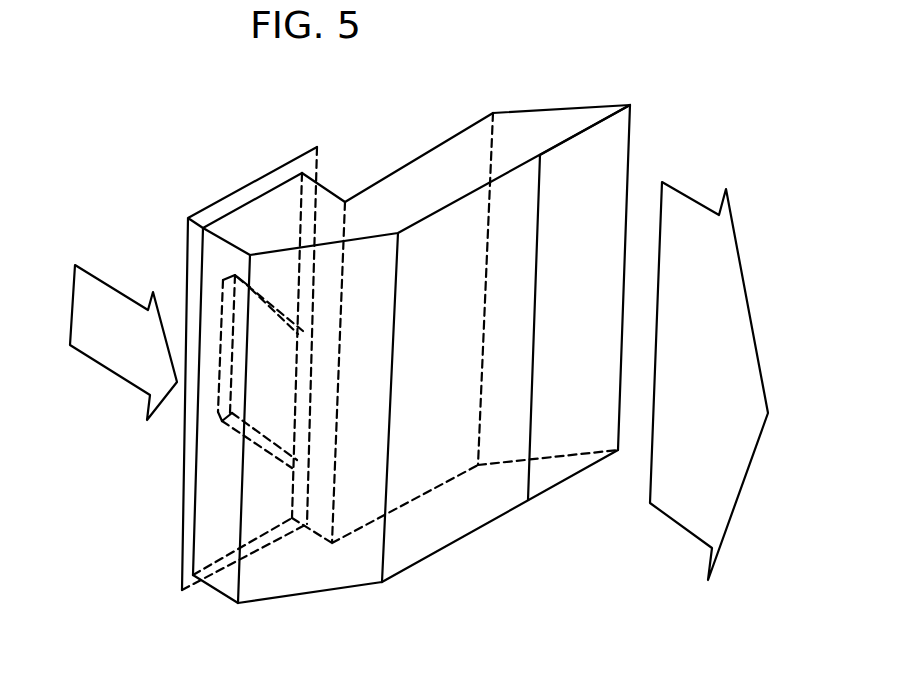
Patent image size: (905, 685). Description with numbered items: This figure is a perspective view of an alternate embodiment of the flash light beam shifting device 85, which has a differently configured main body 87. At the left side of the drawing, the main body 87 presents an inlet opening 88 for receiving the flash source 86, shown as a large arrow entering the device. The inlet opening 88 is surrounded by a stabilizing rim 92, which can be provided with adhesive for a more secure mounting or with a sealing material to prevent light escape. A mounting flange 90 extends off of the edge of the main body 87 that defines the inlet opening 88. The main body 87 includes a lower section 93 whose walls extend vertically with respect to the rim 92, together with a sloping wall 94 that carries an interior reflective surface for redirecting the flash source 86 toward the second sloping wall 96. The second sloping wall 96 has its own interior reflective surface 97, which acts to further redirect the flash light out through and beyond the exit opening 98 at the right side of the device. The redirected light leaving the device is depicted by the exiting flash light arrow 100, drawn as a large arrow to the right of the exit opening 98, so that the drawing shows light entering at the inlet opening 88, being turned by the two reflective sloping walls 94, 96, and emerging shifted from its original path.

The flash light beam shifting device 85 is at (452, 130).
The flash source 86 is at (128, 373).
The main body 87 is at (398, 172).
The inlet opening 88 is at (203, 520).
The mounting flange 90 is at (236, 428).
The stabilizing rim 92 is at (180, 583).
The lower section 93 is at (225, 590).
The sloping wall 94 is at (347, 578).
The second sloping wall 96 is at (542, 112).
The interior reflective surface 97 is at (588, 117).
The exit opening 98 is at (620, 157).
The exiting flash light arrow 100 is at (727, 255).